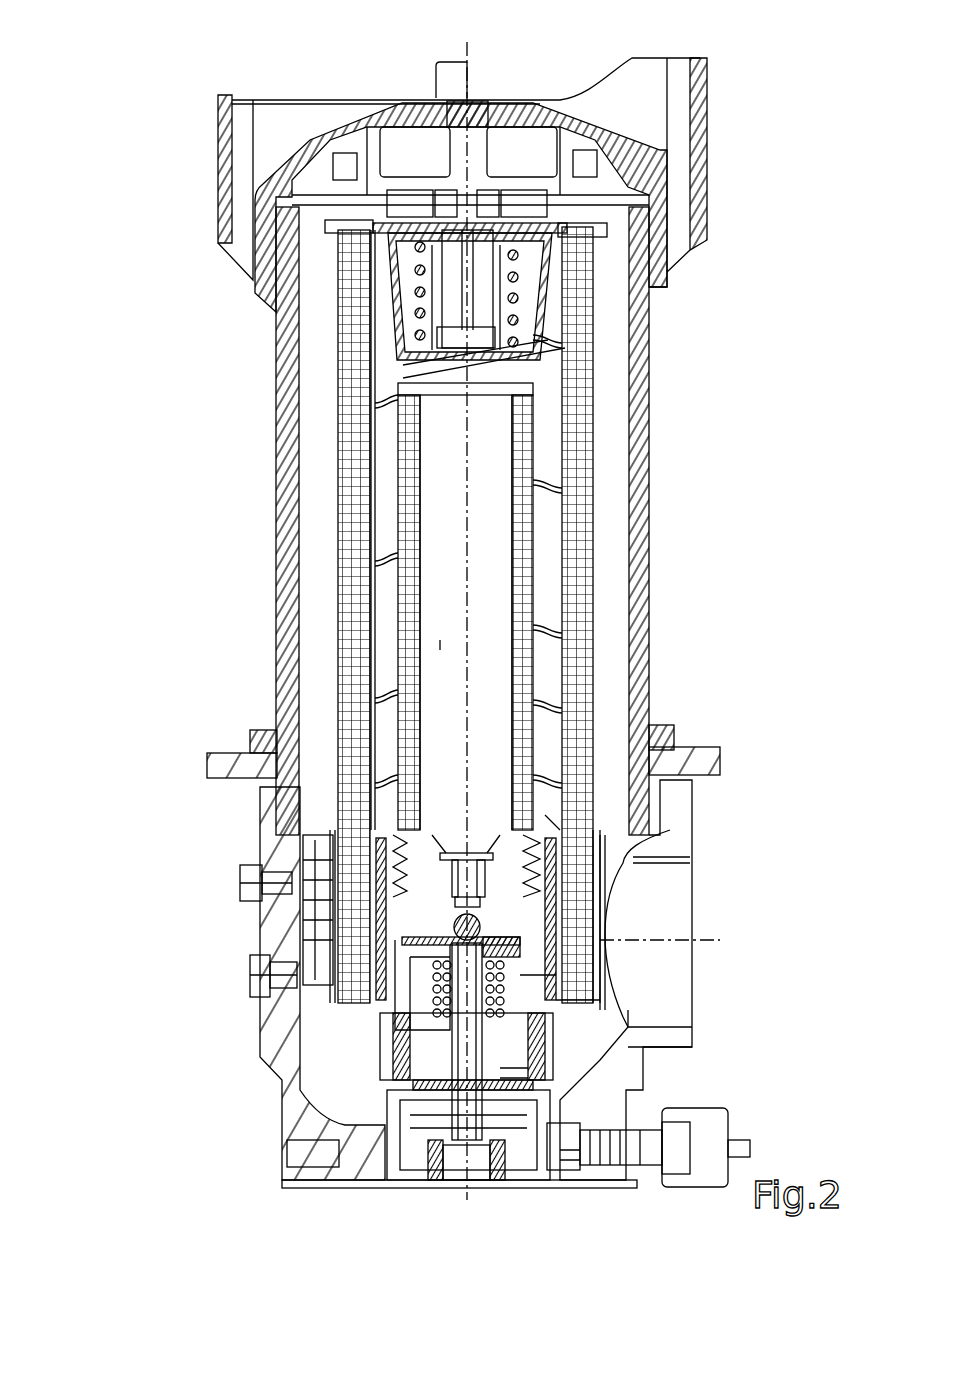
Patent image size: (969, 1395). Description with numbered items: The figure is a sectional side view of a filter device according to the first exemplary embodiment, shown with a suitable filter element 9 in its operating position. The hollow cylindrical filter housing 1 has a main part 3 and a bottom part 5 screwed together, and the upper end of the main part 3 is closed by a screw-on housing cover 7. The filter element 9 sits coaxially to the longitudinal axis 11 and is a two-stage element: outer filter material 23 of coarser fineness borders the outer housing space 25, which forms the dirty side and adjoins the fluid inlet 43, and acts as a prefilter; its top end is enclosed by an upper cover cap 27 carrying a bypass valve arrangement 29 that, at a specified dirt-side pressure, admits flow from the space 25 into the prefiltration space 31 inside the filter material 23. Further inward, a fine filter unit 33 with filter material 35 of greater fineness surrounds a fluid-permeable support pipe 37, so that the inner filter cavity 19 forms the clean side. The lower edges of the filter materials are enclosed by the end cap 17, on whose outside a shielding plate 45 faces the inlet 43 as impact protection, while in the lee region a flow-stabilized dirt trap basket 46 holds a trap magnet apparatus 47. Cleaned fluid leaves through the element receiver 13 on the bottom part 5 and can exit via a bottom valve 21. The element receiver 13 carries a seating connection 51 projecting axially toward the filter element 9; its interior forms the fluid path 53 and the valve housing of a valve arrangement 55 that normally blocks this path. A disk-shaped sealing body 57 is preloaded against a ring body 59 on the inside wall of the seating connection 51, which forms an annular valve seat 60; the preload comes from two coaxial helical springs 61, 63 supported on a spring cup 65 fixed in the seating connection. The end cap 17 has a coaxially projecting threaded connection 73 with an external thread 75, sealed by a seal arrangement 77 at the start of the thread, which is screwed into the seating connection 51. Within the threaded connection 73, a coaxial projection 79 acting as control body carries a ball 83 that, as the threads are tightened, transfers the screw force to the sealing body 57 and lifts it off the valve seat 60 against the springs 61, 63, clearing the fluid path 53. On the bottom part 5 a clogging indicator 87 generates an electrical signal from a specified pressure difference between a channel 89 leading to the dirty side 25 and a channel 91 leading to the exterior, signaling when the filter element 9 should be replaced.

The filter housing 1 is at (213, 368).
The main part 3 is at (288, 442).
The bottom part 5 is at (283, 1035).
The housing cover 7 is at (630, 157).
The filter element 9 is at (333, 632).
The longitudinal axis 11 is at (470, 46).
The element receiver 13 is at (315, 1122).
The end cap 17 is at (420, 838).
The inner filter cavity 19 is at (445, 648).
The bottom valve 21 is at (408, 1095).
The filter material 23 is at (352, 355).
The outer housing space 25 is at (320, 532).
The upper cover cap 27 is at (577, 212).
The bypass valve arrangement 29 is at (598, 313).
The prefiltration space 31 is at (543, 368).
The fine filter unit 33 is at (538, 457).
The filter material 35 is at (528, 548).
The support pipe 37 is at (432, 680).
The fluid inlet 43 is at (612, 862).
The shielding plate 45 is at (575, 852).
The dirt trap basket 46 is at (255, 972).
The trap magnet apparatus 47 is at (255, 880).
The seating connection 51 is at (545, 818).
The fluid path 53 is at (522, 945).
The valve arrangement 55 is at (560, 1000).
The sealing body 57 is at (520, 975).
The ring body 59 is at (527, 925).
The valve seat 60 is at (340, 922).
The helical spring 61 is at (400, 1015).
The helical spring 63 is at (398, 1055).
The spring cup 65 is at (500, 1075).
The threaded connection 73 is at (392, 852).
The external thread 75 is at (540, 860).
The seal arrangement 77 is at (428, 838).
The projection 79 is at (476, 838).
The ball 83 is at (474, 918).
The clogging indicator 87 is at (713, 1122).
The channel 89 is at (568, 1152).
The channel 91 is at (568, 1160).